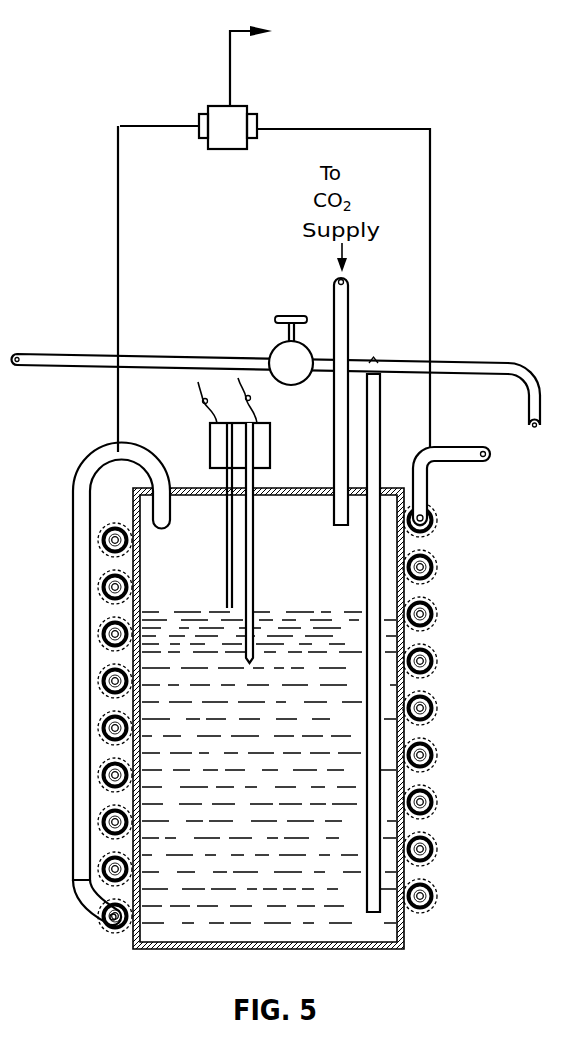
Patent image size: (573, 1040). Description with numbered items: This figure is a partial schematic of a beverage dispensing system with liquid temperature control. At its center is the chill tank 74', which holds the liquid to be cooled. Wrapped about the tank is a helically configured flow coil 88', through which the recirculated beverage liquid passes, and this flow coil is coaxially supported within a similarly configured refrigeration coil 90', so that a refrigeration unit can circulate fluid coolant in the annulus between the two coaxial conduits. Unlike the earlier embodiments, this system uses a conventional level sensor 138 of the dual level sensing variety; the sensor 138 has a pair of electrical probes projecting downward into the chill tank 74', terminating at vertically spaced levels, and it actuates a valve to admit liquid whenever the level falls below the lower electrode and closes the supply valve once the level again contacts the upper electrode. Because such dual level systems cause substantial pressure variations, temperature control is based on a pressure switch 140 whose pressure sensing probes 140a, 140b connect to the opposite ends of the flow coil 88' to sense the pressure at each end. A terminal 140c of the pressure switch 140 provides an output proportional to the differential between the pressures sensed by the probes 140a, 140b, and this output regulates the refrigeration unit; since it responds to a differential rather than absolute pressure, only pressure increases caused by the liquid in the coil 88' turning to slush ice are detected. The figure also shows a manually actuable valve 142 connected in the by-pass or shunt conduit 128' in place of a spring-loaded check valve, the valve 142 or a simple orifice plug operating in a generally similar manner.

The chill tank 74' is at (315, 718).
The helically configured flow coil 88' is at (450, 495).
The refrigeration coil 90' is at (298, 728).
The by-pass or shunt conduit 128' is at (276, 603).
The level sensor 138 is at (210, 445).
The pressure switch 140 is at (243, 106).
The pressure sensing probe 140a is at (175, 126).
The pressure sensing probe 140b is at (362, 129).
The terminal 140c is at (226, 52).
The manually actuable valve 142 is at (275, 345).